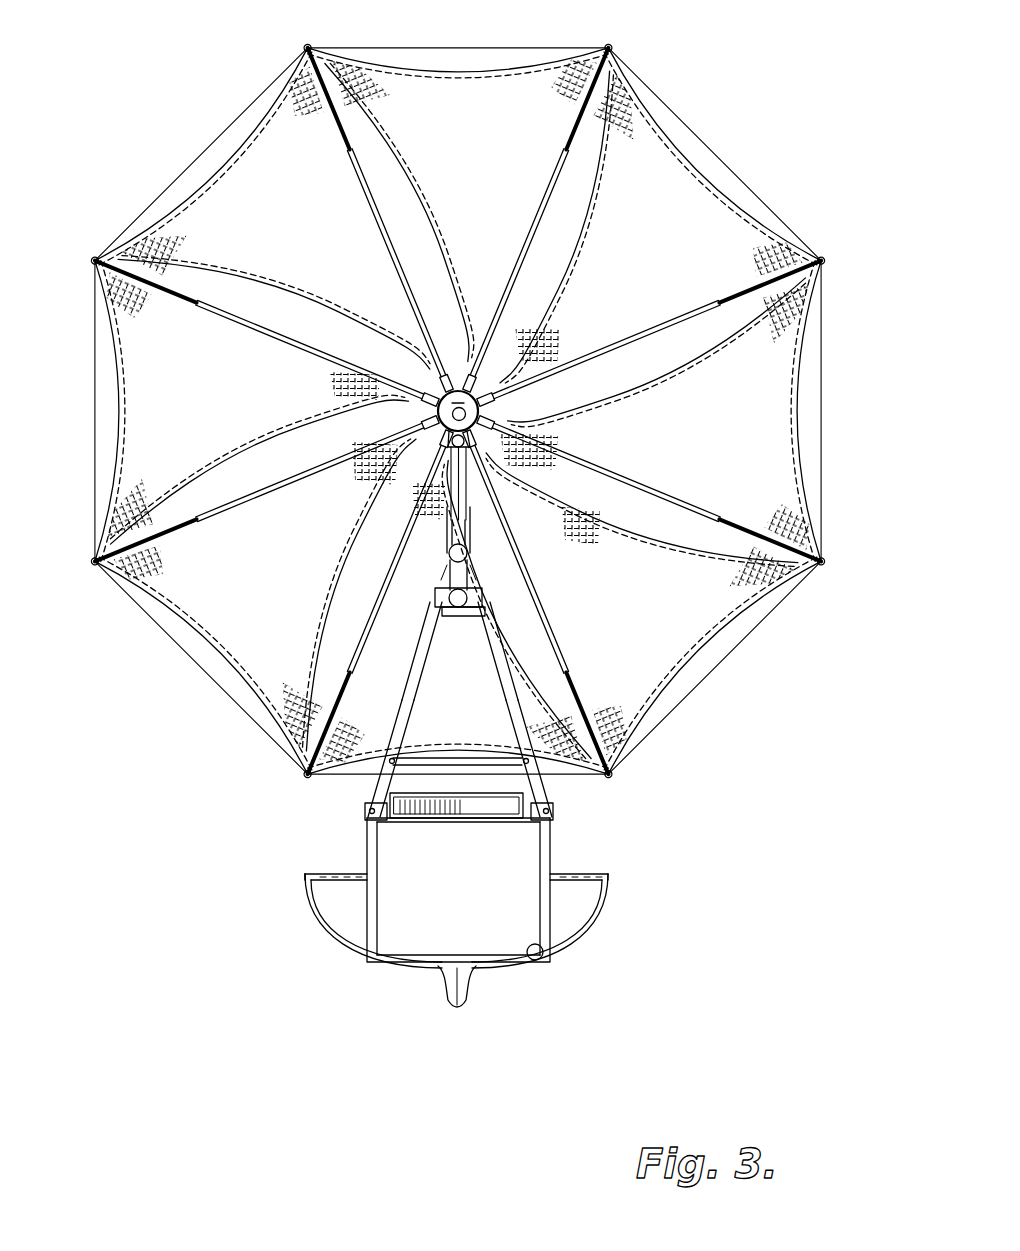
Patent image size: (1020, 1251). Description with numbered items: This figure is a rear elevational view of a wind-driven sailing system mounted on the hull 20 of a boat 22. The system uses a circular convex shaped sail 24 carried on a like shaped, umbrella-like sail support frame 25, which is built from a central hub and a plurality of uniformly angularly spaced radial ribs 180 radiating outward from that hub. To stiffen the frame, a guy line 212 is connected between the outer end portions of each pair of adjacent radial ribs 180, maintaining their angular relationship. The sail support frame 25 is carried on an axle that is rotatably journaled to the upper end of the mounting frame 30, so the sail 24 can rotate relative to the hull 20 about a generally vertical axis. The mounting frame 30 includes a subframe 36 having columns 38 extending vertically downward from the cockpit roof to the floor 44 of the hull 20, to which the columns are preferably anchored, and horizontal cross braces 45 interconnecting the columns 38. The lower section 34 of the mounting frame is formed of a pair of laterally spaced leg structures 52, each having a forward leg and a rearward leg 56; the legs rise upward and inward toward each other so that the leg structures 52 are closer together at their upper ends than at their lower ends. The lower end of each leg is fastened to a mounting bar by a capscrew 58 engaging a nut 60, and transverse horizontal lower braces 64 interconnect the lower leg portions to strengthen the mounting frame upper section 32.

The hull 20 is at (340, 953).
The boat 22 is at (305, 941).
The sail 24 is at (440, 70).
The sail support frame 25 is at (527, 401).
The mounting frame 30 is at (500, 597).
The mounting frame upper section 32 is at (483, 495).
The lower section 34 is at (488, 709).
The subframe 36 is at (570, 935).
The columns 38 is at (372, 915).
The floor 44 is at (546, 960).
The horizontal cross braces 45 is at (425, 822).
The leg structures 52 is at (418, 697).
The rearward leg 56 is at (408, 720).
The capscrew 58 is at (512, 812).
The nut 60 is at (553, 815).
The lower braces 64 is at (477, 761).
The radial ribs 180 is at (530, 246).
The guy line 212 is at (489, 45).